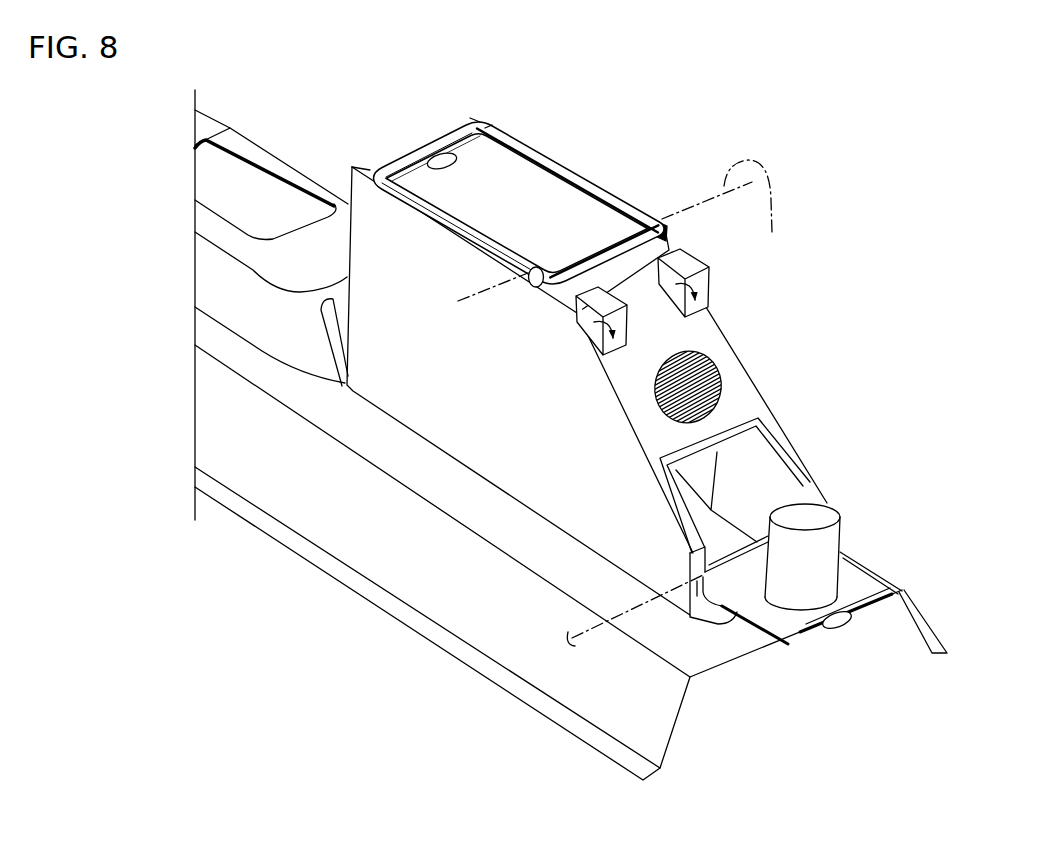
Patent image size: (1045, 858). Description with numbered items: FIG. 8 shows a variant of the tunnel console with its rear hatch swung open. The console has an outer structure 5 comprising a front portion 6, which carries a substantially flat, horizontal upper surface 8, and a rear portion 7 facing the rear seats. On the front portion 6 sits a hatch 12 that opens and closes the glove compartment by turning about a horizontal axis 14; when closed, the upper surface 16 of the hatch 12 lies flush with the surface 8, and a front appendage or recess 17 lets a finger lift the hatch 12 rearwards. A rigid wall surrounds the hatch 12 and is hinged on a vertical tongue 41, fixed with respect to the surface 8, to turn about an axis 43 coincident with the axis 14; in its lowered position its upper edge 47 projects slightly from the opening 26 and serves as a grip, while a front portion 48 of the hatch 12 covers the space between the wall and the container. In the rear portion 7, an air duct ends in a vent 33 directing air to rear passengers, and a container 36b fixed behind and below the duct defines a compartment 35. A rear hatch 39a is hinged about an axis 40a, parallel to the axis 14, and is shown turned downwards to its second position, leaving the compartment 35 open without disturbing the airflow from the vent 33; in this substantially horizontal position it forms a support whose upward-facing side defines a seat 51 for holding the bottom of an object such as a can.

The outer structure 5 is at (480, 104).
The front portion 6 is at (672, 241).
The rear portion 7 is at (717, 333).
The upper surface 8 is at (386, 155).
The hatch 12 is at (613, 250).
The axis 14 is at (769, 196).
The upper surface of the hatch 16 is at (498, 200).
The front appendage or recess 17 is at (443, 153).
The opening 26 is at (452, 236).
The vent 33 is at (714, 371).
The compartment 35 is at (750, 492).
The container 36b is at (757, 447).
The rear hatch 39a is at (853, 587).
The axis 40a is at (635, 622).
The vertical tongue 41 is at (613, 240).
The axis 43 is at (724, 201).
The upper edge 47 is at (563, 207).
The front portion of the hatch 48 is at (491, 158).
The seat 51 is at (713, 286).